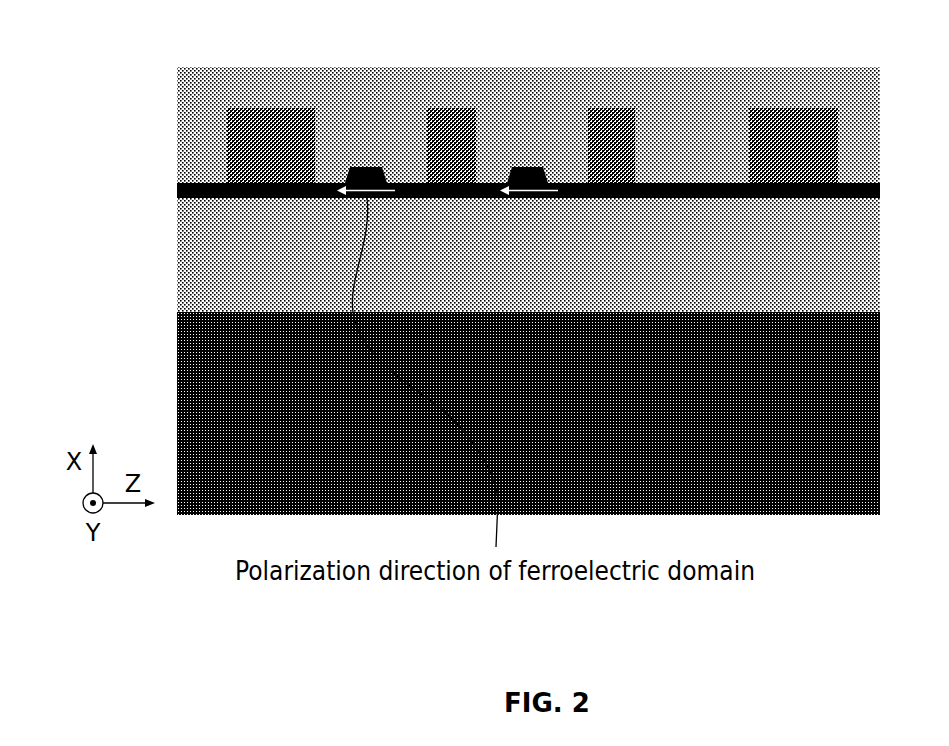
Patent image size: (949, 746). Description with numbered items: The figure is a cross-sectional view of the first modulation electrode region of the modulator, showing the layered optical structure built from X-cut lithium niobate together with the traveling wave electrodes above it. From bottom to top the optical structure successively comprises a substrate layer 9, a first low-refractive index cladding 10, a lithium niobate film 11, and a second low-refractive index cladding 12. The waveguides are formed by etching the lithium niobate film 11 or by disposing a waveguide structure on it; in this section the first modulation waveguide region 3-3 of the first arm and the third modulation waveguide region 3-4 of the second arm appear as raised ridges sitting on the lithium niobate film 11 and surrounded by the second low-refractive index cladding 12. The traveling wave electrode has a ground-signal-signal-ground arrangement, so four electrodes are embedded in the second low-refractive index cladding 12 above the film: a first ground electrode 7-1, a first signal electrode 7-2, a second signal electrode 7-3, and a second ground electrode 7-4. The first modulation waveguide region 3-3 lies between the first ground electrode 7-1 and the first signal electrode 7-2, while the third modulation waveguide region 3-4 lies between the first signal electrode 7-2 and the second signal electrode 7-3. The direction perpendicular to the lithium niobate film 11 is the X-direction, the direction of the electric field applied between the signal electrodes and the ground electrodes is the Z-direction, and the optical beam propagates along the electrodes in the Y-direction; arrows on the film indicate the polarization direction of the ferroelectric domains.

The first ground electrode 7-1 is at (265, 108).
The first signal electrode 7-2 is at (450, 108).
The second signal electrode 7-3 is at (618, 108).
The second ground electrode 7-4 is at (785, 108).
The first modulation waveguide region 3-3 is at (365, 167).
The third modulation waveguide region 3-4 is at (528, 167).
The second low-refractive index cladding 12 is at (880, 102).
The lithium niobate film 11 is at (880, 183).
The first low-refractive index cladding 10 is at (873, 279).
The substrate layer 9 is at (880, 365).